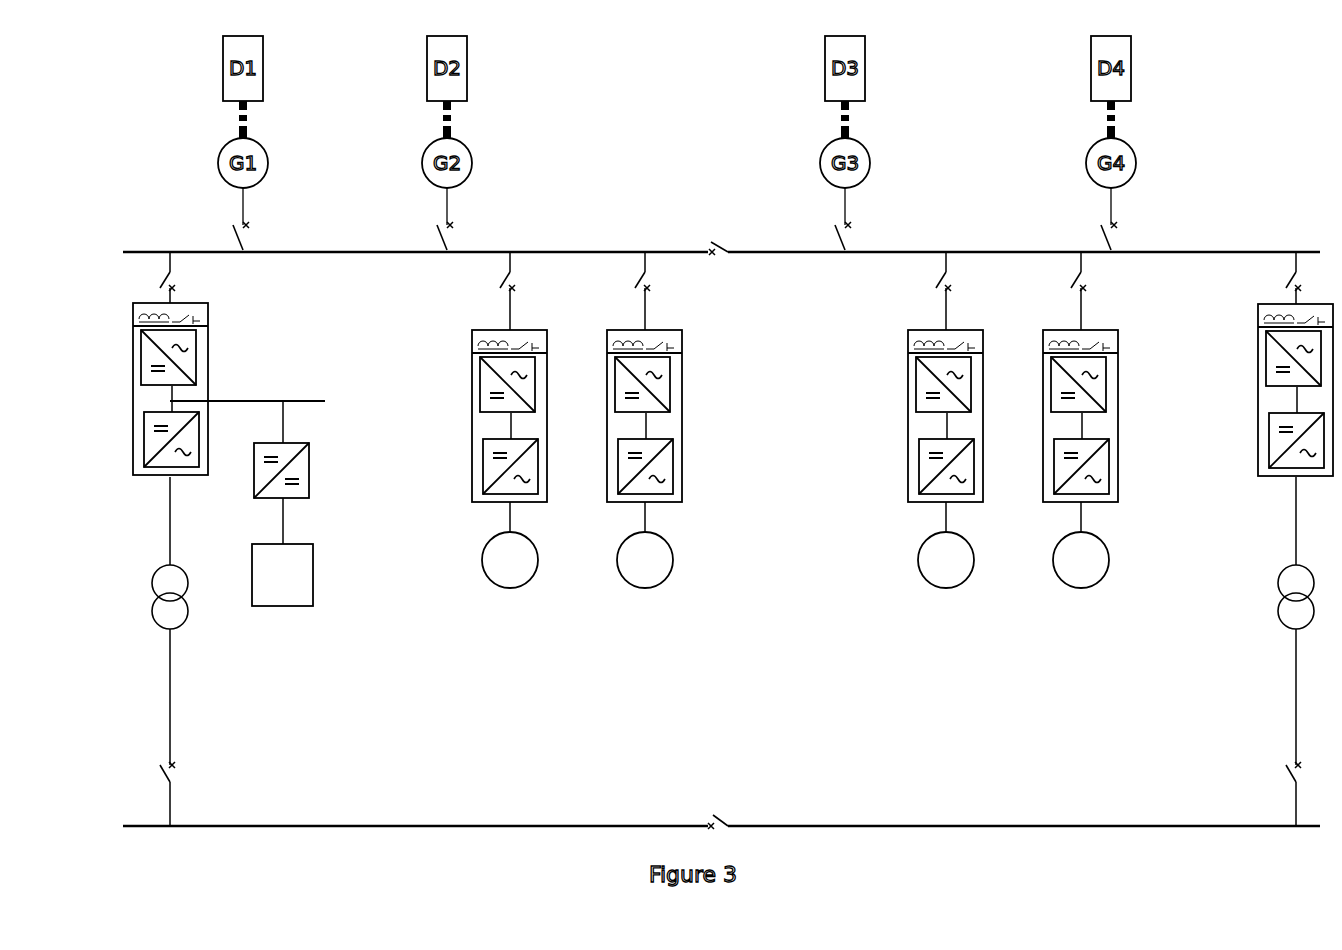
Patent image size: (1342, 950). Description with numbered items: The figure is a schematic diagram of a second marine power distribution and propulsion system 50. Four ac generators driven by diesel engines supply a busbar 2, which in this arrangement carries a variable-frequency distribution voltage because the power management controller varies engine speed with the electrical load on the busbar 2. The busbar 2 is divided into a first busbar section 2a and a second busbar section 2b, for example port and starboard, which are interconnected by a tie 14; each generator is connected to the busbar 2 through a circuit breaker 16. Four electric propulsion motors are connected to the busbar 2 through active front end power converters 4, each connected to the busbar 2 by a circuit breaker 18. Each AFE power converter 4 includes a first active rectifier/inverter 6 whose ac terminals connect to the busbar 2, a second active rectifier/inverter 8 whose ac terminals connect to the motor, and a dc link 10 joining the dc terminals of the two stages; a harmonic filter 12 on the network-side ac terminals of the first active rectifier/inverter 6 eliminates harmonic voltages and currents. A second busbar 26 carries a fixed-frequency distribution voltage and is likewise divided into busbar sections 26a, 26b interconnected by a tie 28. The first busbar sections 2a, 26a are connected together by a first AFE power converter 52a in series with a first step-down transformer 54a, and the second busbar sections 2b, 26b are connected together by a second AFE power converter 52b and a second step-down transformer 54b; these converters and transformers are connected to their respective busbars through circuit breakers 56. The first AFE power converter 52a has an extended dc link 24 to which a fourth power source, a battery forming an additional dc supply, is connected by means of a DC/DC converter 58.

The busbar 2 is at (721, 180).
The first busbar section 2a is at (662, 252).
The second busbar section 2b is at (962, 252).
The active front end power converter 4 is at (770, 444).
The first active rectifier/inverter 6 is at (920, 378).
The second active rectifier/inverter 8 is at (980, 497).
The dc link 10 is at (1085, 427).
The harmonic filter 12 is at (470, 335).
The tie 14 is at (700, 227).
The circuit breaker 16 is at (430, 228).
The circuit breaker 18 is at (657, 297).
The extended dc link 24 is at (293, 392).
The second busbar 26 is at (721, 772).
The first busbar section of second busbar 26a is at (507, 826).
The second busbar section of second busbar 26b is at (979, 826).
The tie 28 is at (704, 797).
The marine power distribution and propulsion system 50 is at (1213, 142).
The first AFE power converter 52a is at (675, 534).
The second AFE power converter 52b is at (1248, 405).
The first step-down transformer 54a is at (197, 616).
The second step-down transformer 54b is at (1262, 613).
The circuit breaker 56 is at (153, 282).
The DC/DC converter 58 is at (310, 462).